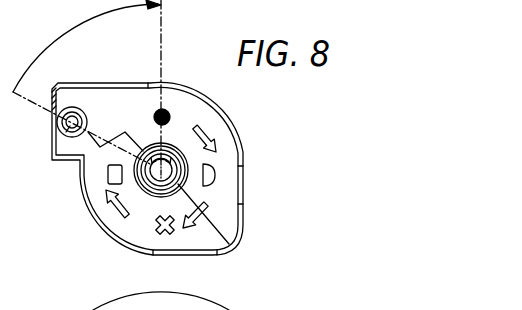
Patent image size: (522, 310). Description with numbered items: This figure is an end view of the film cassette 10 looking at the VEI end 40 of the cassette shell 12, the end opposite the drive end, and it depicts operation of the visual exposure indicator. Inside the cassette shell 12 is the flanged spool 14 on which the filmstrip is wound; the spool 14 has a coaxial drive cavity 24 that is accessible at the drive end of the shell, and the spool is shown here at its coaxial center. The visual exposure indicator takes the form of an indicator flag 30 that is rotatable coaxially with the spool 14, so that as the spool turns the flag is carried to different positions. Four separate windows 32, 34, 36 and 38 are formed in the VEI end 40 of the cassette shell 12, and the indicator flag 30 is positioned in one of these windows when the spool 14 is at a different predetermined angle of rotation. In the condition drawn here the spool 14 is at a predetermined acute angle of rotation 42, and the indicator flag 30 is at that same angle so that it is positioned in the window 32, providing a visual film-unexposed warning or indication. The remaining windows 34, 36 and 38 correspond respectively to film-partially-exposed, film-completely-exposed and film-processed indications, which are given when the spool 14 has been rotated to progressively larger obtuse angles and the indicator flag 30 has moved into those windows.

The film cassette 10 is at (244, 241).
The cassette shell 12 is at (217, 242).
The flanged spool 14 is at (186, 166).
The coaxial drive cavity 24 is at (182, 151).
The indicator flag 30 is at (158, 111).
The window 32 is at (174, 109).
The window 34 is at (208, 186).
The window 36 is at (157, 233).
The window 38 is at (107, 184).
The VEI end 40 is at (236, 217).
The predetermined acute angle of rotation 42 is at (157, 6).